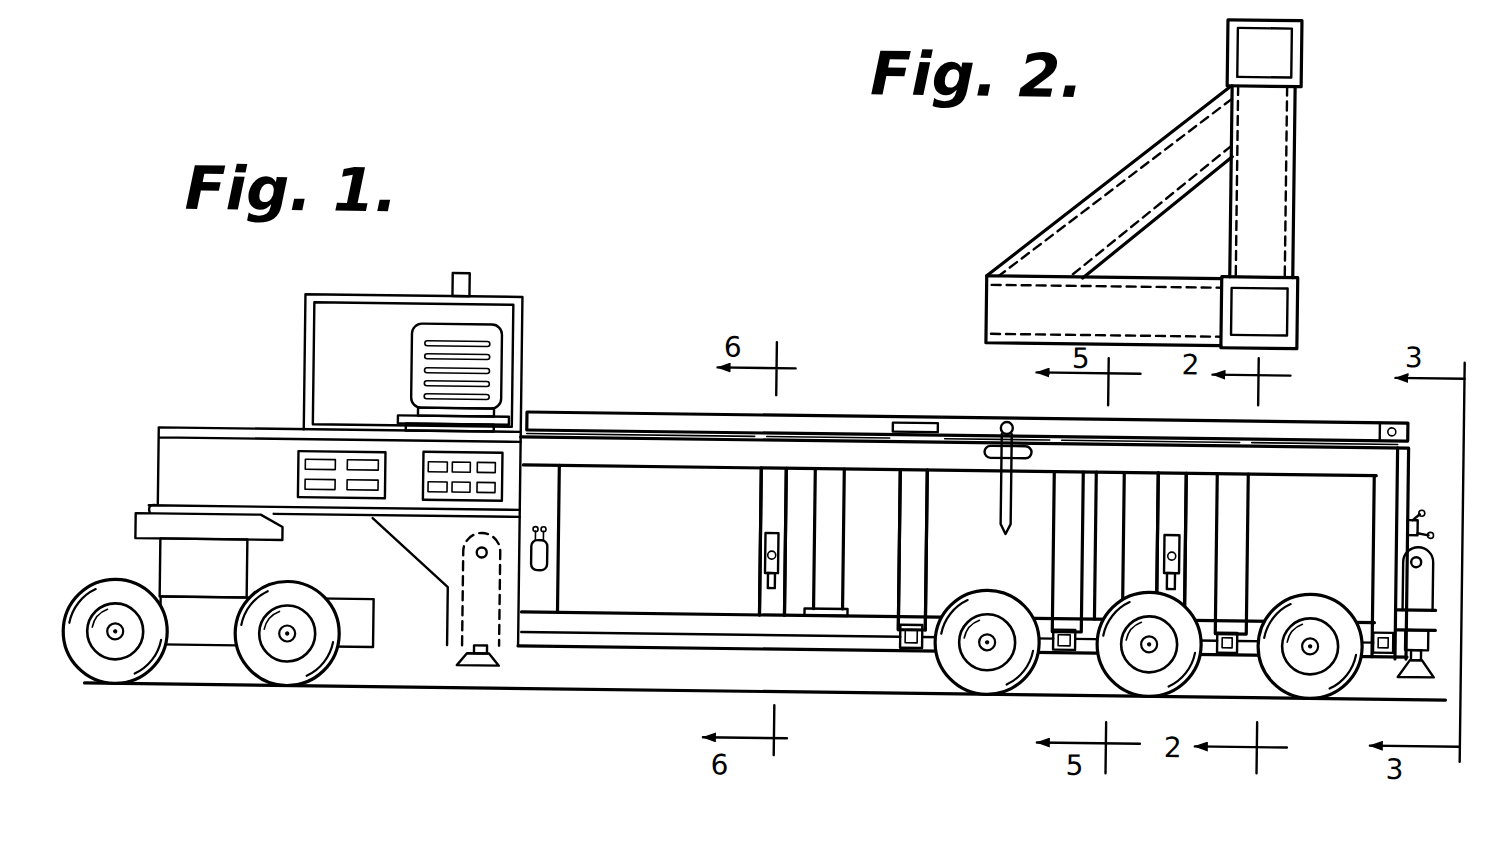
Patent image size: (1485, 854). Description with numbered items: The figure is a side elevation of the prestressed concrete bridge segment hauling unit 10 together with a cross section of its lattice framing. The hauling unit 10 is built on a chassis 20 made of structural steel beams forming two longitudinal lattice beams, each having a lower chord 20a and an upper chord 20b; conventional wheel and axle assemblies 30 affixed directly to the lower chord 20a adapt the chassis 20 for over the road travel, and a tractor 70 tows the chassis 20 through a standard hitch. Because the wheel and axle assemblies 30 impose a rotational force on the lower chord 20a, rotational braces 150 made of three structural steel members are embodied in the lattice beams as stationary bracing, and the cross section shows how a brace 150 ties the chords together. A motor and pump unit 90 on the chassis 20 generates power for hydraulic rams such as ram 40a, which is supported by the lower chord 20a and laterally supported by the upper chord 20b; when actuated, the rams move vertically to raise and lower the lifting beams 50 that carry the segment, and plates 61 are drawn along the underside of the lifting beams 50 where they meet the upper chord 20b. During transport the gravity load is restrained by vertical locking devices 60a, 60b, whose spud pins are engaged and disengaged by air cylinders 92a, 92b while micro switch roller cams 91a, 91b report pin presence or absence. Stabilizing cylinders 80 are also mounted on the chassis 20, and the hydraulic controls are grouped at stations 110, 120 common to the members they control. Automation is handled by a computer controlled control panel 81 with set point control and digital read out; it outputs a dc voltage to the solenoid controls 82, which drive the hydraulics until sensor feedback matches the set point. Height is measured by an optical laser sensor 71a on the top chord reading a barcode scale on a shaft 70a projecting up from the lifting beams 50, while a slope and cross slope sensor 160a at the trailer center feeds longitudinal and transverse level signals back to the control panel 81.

In FIG. 1, the prestressed concrete bridge segment hauling unit 10 is at (715, 286).
In FIG. 1, the chassis 20 is at (620, 649).
In FIG. 1, the lower chord 20a is at (891, 628).
In FIG. 2, the lower chord 20a is at (1297, 303).
In FIG. 1, the upper chord 20b is at (703, 450).
In FIG. 2, the upper chord 20b is at (1298, 50).
In FIG. 1, the wheel and axle assemblies 30 is at (938, 658).
In FIG. 1, the hydraulic cylinder or ram 40a is at (823, 574).
In FIG. 1, the lifting beams 50 is at (615, 419).
In FIG. 1, the vertical locking device 60a is at (765, 496).
In FIG. 1, the vertical locking device 60b is at (1178, 515).
In FIG. 1, the slide plate 61 is at (785, 429).
In FIG. 1, the tractor 70 is at (220, 651).
In FIG. 1, the shaft 70a is at (1006, 416).
In FIG. 1, the optical laser sensor 71a is at (995, 450).
In FIG. 1, the stabilizing cylinders 80 is at (1411, 602).
In FIG. 1, the control panel 81 is at (303, 471).
In FIG. 1, the solenoid controls 82 is at (459, 493).
In FIG. 1, the motor and pump unit 90 is at (406, 372).
In FIG. 1, the micro switch roller cam 91a is at (770, 576).
In FIG. 1, the micro switch roller cam 91b is at (1178, 574).
In FIG. 1, the air cylinder 92a is at (767, 550).
In FIG. 1, the air cylinder 92b is at (1181, 550).
In FIG. 1, the station 110 is at (1421, 502).
In FIG. 1, the station 120 is at (1403, 522).
In FIG. 1, the rotational brace 150 is at (925, 564).
In FIG. 2, the rotational brace 150 is at (1084, 182).
In FIG. 1, the slope and cross slope sensor 160a is at (918, 417).